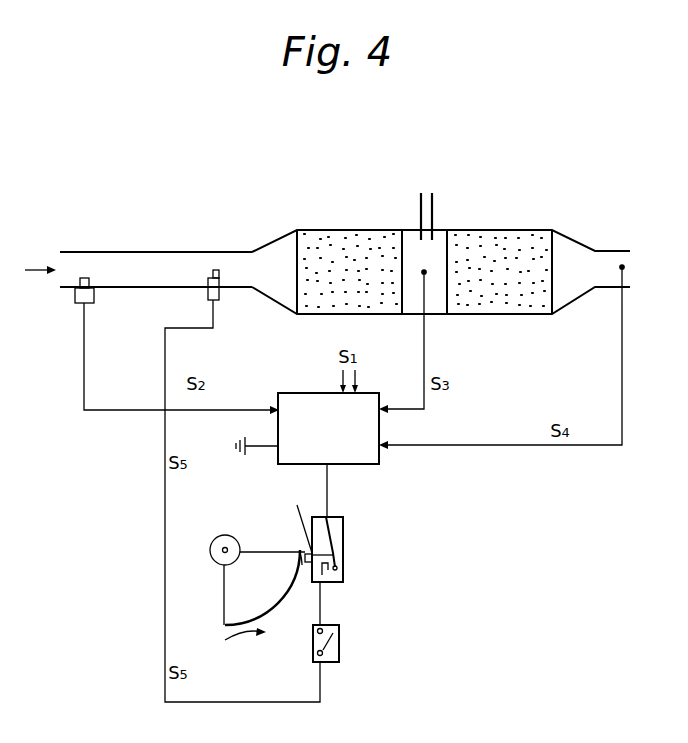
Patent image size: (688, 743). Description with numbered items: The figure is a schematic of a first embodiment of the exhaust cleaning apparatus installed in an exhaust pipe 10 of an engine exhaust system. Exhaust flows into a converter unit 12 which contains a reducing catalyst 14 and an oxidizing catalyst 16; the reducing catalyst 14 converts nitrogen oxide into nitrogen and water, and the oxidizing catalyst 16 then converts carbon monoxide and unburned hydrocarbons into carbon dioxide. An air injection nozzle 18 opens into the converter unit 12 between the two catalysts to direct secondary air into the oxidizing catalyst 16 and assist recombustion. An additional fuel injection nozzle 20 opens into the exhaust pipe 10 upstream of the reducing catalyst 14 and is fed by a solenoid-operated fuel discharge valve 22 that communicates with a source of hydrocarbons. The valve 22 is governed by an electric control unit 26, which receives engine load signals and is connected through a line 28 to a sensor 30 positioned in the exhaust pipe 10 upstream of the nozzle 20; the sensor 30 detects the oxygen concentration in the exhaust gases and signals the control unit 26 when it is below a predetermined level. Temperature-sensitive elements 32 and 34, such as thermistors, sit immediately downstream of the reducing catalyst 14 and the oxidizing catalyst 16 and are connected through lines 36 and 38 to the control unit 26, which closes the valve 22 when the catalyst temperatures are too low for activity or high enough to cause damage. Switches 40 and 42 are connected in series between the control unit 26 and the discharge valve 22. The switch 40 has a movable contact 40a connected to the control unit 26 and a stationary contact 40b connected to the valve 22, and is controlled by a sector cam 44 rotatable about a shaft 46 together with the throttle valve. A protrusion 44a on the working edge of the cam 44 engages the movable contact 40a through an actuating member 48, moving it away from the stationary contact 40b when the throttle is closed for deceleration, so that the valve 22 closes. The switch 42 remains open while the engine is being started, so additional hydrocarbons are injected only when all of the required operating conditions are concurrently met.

The exhaust pipe 10 is at (181, 251).
The converter unit 12 is at (379, 224).
The reducing catalyst 14 is at (314, 240).
The oxidizing catalyst 16 is at (488, 237).
The air injection nozzle 18 is at (433, 205).
The additional fuel injection nozzle 20 is at (219, 276).
The fuel discharge valve 22 is at (208, 293).
The electric control unit 26 is at (364, 464).
The line 28 is at (84, 374).
The sensor 30 is at (94, 303).
The temperature-sensitive element 32 is at (426, 274).
The temperature-sensitive element 34 is at (620, 270).
The line 36 is at (424, 358).
The line 38 is at (501, 445).
The switch 40 is at (343, 530).
The movable contact 40a is at (335, 553).
The stationary contact 40b is at (326, 575).
The switch 42 is at (339, 646).
The sector cam 44 is at (237, 587).
The protrusion 44a is at (300, 585).
The shaft 46 is at (237, 541).
The actuating member 48 is at (297, 519).